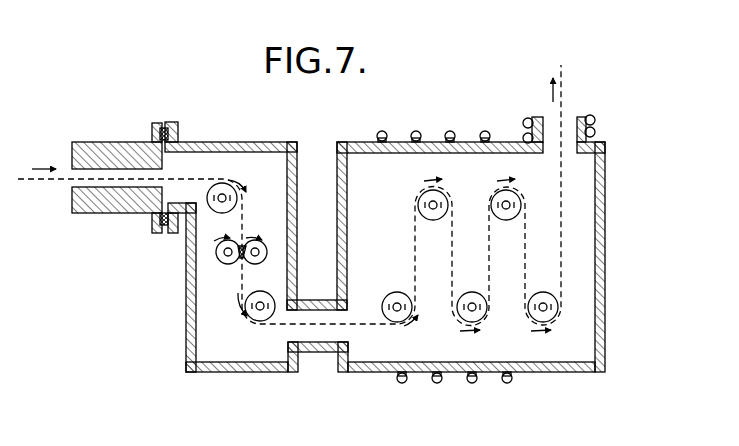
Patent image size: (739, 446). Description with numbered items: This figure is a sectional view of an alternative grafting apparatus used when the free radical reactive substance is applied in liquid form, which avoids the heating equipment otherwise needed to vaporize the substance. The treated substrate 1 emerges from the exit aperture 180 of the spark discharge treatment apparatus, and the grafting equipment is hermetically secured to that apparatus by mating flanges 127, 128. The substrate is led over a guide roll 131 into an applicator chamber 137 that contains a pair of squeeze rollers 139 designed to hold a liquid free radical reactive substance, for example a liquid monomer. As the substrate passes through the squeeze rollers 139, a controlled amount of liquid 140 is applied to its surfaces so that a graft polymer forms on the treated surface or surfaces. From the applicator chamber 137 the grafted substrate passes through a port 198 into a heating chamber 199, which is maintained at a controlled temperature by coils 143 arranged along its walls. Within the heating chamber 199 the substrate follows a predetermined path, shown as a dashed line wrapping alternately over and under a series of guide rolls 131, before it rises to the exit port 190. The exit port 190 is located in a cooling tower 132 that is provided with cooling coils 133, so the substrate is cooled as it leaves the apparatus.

The substrate 1 is at (32, 180).
The mating flange 127 is at (153, 125).
The mating flange 128 is at (178, 128).
The exit aperture 180 is at (158, 186).
The guide roll 131 is at (238, 198).
The squeeze rollers 139 is at (252, 262).
The liquid 140 is at (245, 246).
The applicator chamber 137 is at (197, 333).
The port 198 is at (321, 343).
The coils 143 is at (383, 131).
The exit port 190 is at (567, 118).
The cooling tower 132 is at (594, 115).
The cooling coils 133 is at (596, 131).
The heating chamber 199 is at (605, 313).